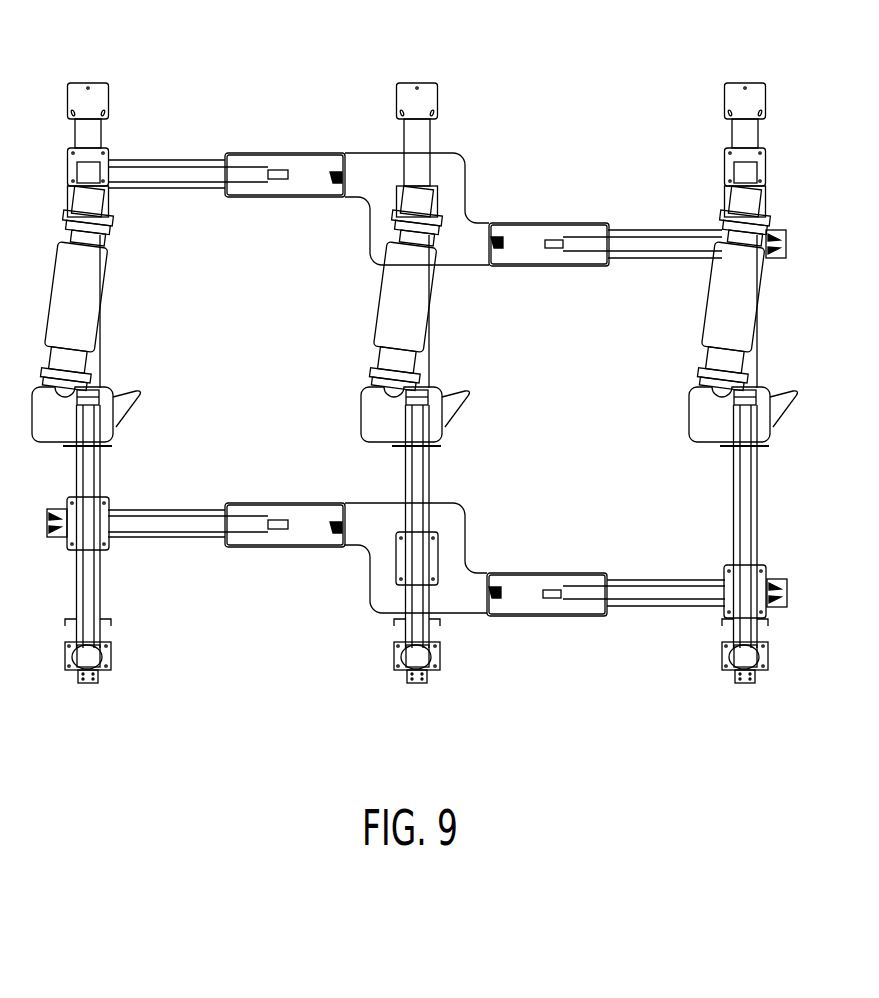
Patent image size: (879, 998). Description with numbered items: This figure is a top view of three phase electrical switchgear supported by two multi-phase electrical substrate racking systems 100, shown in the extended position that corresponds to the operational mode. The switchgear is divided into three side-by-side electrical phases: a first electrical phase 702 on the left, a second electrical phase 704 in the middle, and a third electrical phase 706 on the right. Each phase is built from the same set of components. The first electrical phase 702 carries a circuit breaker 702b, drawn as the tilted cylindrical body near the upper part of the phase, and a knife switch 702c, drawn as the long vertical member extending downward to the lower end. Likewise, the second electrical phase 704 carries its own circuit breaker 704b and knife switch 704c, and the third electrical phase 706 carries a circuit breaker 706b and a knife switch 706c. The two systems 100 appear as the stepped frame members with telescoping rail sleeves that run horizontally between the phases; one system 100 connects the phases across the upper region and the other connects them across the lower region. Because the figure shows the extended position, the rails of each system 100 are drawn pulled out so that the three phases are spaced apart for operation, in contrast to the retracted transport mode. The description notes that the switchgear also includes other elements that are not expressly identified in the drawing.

The system 100 is at (466, 180).
The first electrical phase 702 is at (38, 485).
The circuit breaker 702b is at (85, 283).
The knife switch 702c is at (90, 588).
The second electrical phase 704 is at (467, 347).
The circuit breaker 704b is at (390, 313).
The knife switch 704c is at (417, 486).
The third electrical phase 706 is at (790, 362).
The circuit breaker 706b is at (720, 323).
The knife switch 706c is at (745, 528).